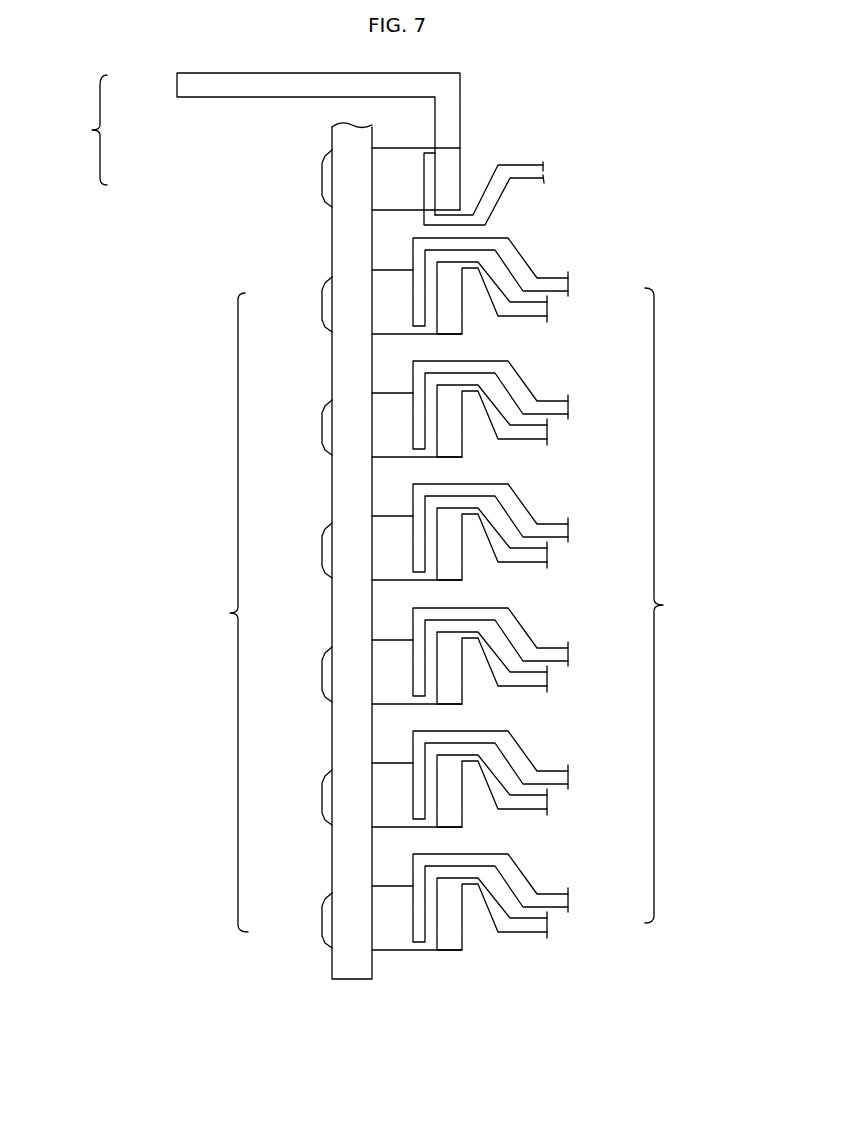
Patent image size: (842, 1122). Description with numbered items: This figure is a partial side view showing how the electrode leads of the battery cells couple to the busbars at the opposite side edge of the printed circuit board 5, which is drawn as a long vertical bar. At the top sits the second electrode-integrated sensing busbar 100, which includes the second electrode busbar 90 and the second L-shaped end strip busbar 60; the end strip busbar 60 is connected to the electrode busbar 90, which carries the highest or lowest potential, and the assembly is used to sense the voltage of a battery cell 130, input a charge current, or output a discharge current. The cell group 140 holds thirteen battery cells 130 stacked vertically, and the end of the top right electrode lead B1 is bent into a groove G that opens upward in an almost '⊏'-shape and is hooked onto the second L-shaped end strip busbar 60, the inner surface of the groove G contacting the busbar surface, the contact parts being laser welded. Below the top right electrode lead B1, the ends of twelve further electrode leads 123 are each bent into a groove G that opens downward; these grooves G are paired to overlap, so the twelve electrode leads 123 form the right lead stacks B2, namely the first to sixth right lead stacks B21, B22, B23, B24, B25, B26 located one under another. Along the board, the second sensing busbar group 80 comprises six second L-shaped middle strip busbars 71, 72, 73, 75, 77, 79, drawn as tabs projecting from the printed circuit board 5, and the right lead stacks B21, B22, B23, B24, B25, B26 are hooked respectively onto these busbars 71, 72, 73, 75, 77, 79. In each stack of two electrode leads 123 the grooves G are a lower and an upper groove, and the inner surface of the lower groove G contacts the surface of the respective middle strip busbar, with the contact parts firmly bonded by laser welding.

The printed circuit board 5 is at (352, 972).
The second electrode-integrated sensing busbar 100 is at (255, 143).
The second electrode busbar 90 is at (177, 84).
The second L-shaped end strip busbar 60 is at (322, 178).
The top right electrode lead B1 is at (520, 195).
The electrode leads 123 is at (514, 195).
The battery cell 130 is at (523, 178).
The groove G is at (484, 177).
The second sensing busbar group 80 is at (331, 610).
The second L-shaped middle strip busbar 71 is at (357, 302).
The second L-shaped middle strip busbar 72 is at (357, 425).
The second L-shaped middle strip busbar 73 is at (357, 548).
The second L-shaped middle strip busbar 75 is at (357, 672).
The second L-shaped middle strip busbar 77 is at (357, 795).
The second L-shaped middle strip busbar 79 is at (357, 918).
The right lead stacks B2 is at (580, 594).
The cell group 140 is at (580, 594).
The first right lead stack B21 is at (528, 286).
The second right lead stack B22 is at (528, 409).
The third right lead stack B23 is at (528, 532).
The fourth right lead stack B24 is at (528, 656).
The fifth right lead stack B25 is at (528, 779).
The sixth right lead stack B26 is at (528, 902).